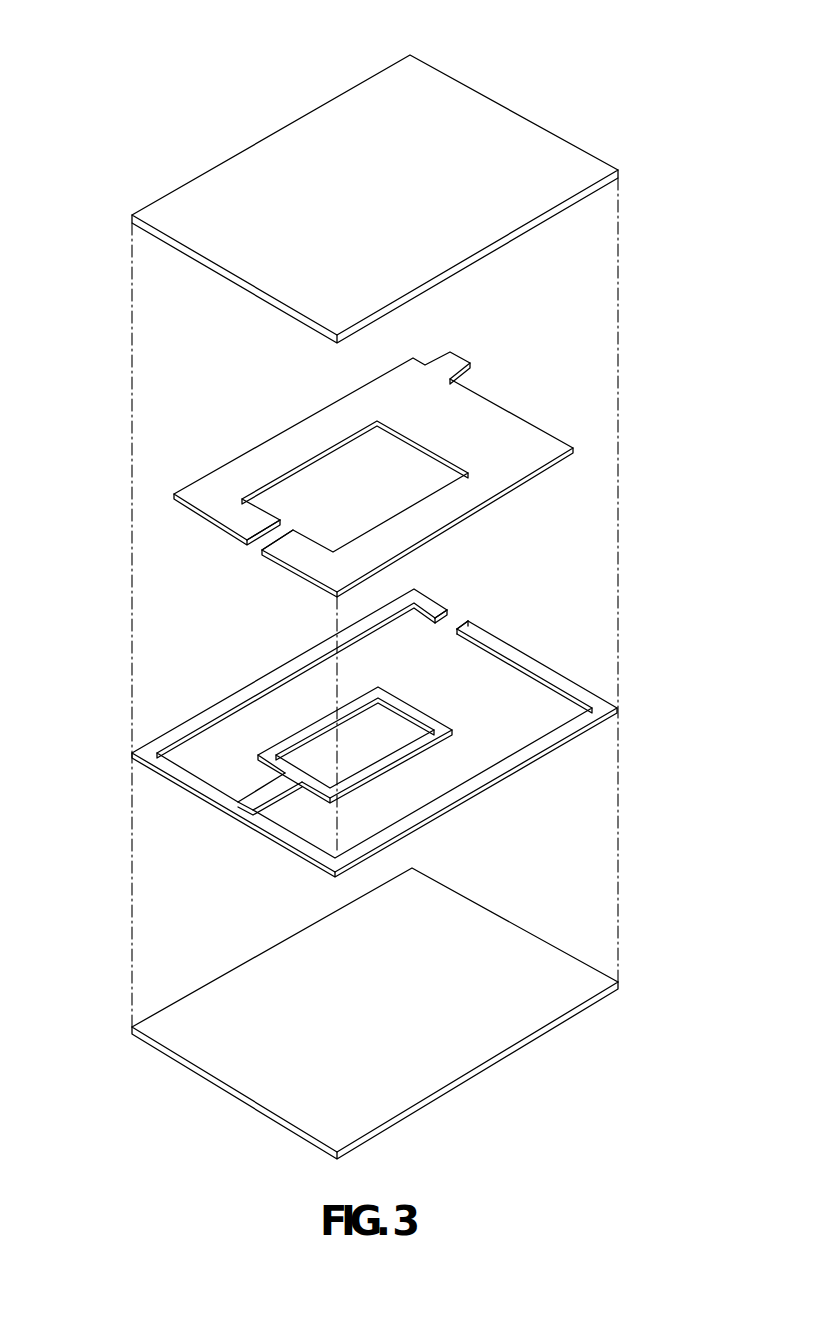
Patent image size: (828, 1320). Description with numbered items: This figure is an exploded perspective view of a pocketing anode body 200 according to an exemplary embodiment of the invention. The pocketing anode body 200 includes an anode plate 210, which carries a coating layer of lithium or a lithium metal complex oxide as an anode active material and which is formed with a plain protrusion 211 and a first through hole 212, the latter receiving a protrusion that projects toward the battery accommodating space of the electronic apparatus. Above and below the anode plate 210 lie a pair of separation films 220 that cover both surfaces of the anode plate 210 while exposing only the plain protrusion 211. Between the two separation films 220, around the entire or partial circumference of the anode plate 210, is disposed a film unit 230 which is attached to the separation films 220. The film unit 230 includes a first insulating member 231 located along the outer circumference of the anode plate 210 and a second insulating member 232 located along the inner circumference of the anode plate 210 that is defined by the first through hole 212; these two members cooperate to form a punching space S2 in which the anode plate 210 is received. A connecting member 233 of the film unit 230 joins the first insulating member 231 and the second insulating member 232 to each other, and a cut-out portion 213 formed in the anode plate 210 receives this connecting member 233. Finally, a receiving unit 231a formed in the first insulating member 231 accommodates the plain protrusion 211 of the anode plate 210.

The pocketing anode body 200 is at (610, 37).
The anode plate 210 is at (373, 468).
The plain protrusion 211 is at (468, 358).
The first through hole 212 is at (388, 467).
The cut-out portion 213 is at (265, 540).
The separation films 220 is at (205, 196).
The film unit 230 is at (374, 730).
The first insulating member 231 is at (520, 760).
The receiving unit 231a is at (455, 622).
The second insulating member 232 is at (425, 712).
The connecting member 233 is at (290, 795).
The punching space S2 is at (285, 695).